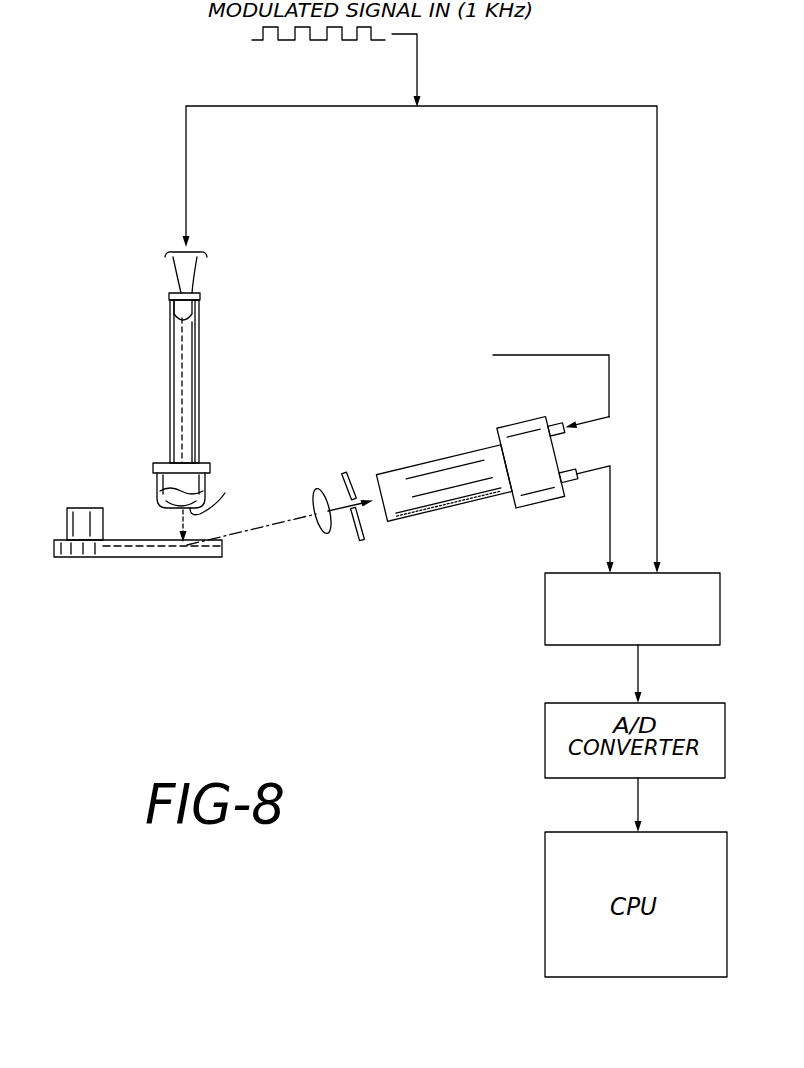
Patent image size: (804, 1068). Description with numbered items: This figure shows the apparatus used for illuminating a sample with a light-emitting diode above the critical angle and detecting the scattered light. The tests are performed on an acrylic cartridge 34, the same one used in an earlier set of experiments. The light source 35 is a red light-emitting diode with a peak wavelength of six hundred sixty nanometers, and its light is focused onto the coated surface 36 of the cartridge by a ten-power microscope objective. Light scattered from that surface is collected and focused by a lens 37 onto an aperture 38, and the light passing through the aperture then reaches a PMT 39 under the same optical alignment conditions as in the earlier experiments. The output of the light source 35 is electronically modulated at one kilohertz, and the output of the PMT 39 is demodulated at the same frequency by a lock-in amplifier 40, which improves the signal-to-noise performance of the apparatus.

The acrylic cartridge 34 is at (73, 558).
The light source 35 is at (193, 319).
The coated surface 36 is at (185, 557).
The lens 37 is at (322, 536).
The aperture 38 is at (365, 512).
The PMT 39 is at (451, 456).
The lock-in amplifier 40 is at (545, 612).